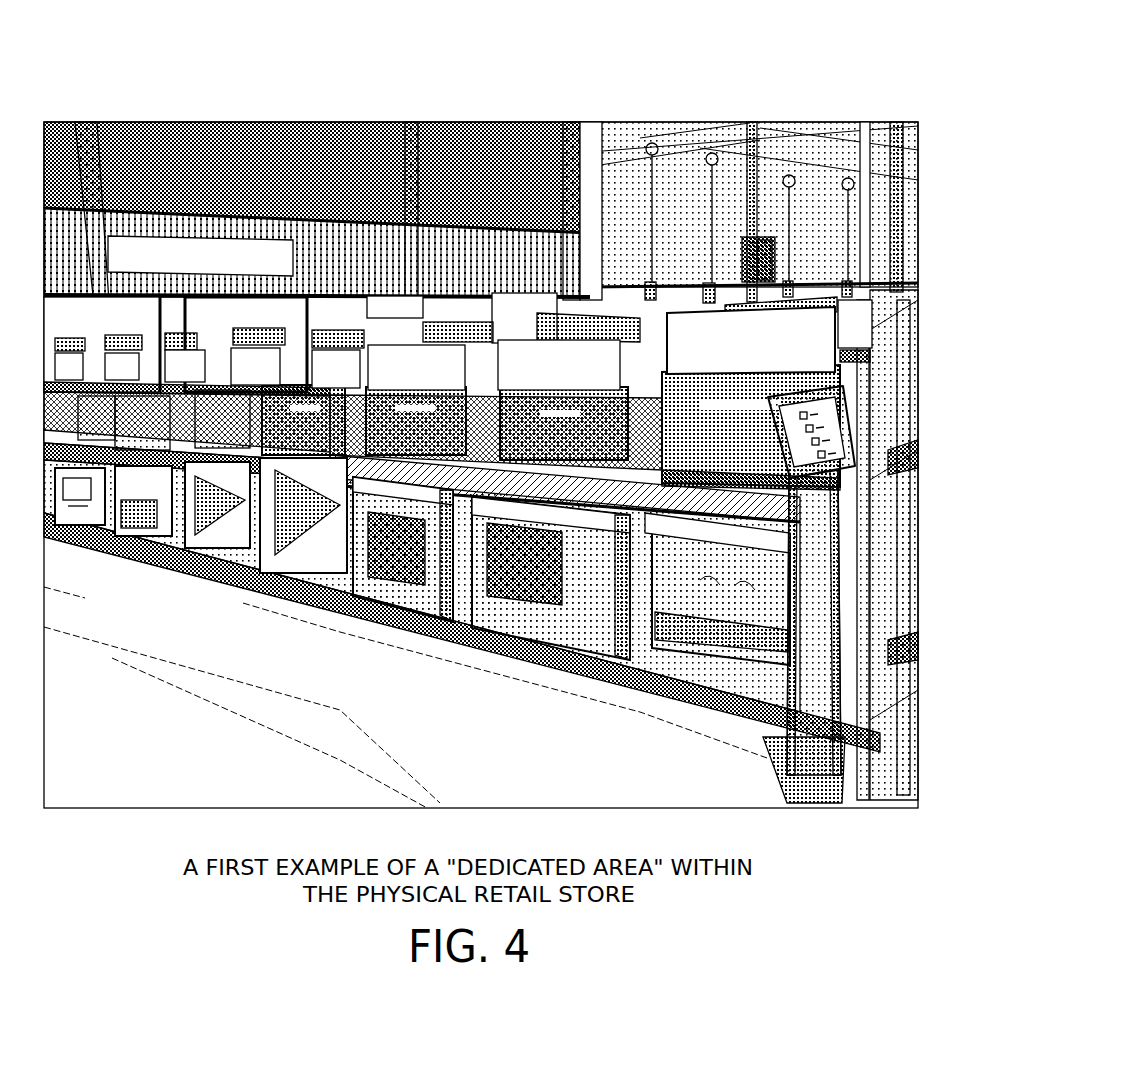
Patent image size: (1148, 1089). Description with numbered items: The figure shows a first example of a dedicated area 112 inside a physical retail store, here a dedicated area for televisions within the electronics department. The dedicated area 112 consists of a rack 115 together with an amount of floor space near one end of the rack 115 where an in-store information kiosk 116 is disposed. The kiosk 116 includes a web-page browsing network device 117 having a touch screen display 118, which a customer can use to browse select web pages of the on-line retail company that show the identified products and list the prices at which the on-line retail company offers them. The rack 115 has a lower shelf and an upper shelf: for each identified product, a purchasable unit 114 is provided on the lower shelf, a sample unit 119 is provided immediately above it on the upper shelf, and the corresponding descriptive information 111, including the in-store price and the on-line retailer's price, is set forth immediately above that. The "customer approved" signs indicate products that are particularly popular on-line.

The descriptive information 111 is at (546, 484).
The dedicated area 112 is at (722, 100).
The purchasable unit 114 is at (619, 650).
The rack 115 is at (90, 568).
The in-store information kiosk 116 is at (847, 790).
The web-page browsing network device 117 is at (840, 438).
The touch screen display 118 is at (869, 478).
The sample unit 119 is at (483, 463).